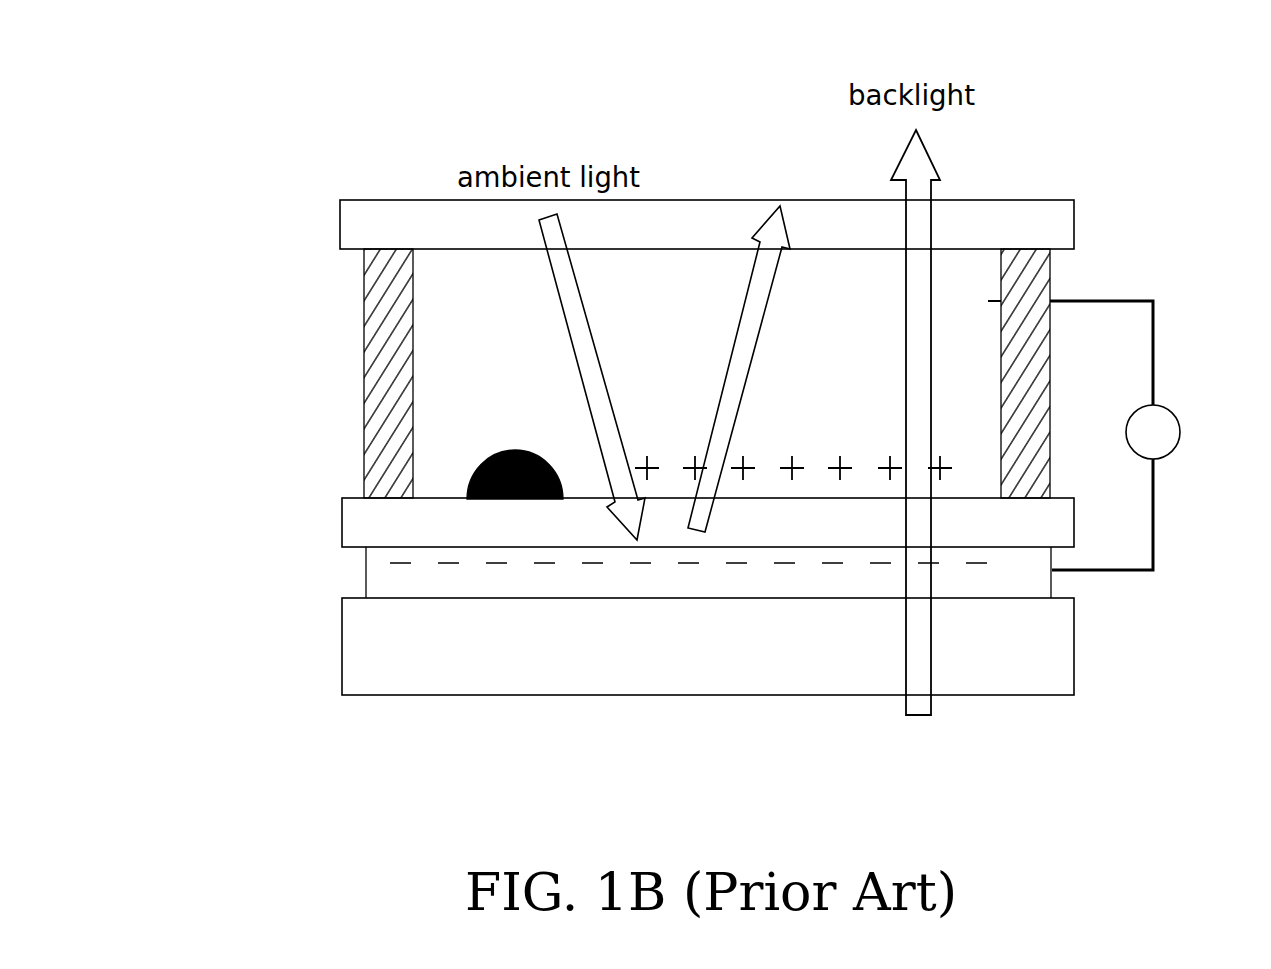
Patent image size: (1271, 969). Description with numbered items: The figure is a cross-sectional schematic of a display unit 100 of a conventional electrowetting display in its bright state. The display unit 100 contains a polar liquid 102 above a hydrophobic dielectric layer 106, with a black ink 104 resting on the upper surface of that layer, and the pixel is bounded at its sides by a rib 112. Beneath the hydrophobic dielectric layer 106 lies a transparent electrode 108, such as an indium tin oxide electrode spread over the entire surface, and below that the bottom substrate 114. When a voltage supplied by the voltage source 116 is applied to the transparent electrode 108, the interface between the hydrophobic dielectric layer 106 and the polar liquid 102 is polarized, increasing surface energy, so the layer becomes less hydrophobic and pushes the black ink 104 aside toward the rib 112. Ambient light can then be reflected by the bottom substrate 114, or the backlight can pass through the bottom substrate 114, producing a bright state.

The display unit 100 is at (130, 43).
The polar liquid 102 is at (443, 378).
The black ink 104 is at (482, 462).
The hydrophobic dielectric layer 106 is at (362, 524).
The transparent electrode 108 is at (512, 580).
The rib 112 is at (378, 427).
The bottom substrate 114 is at (382, 667).
The voltage source 116 is at (1170, 403).